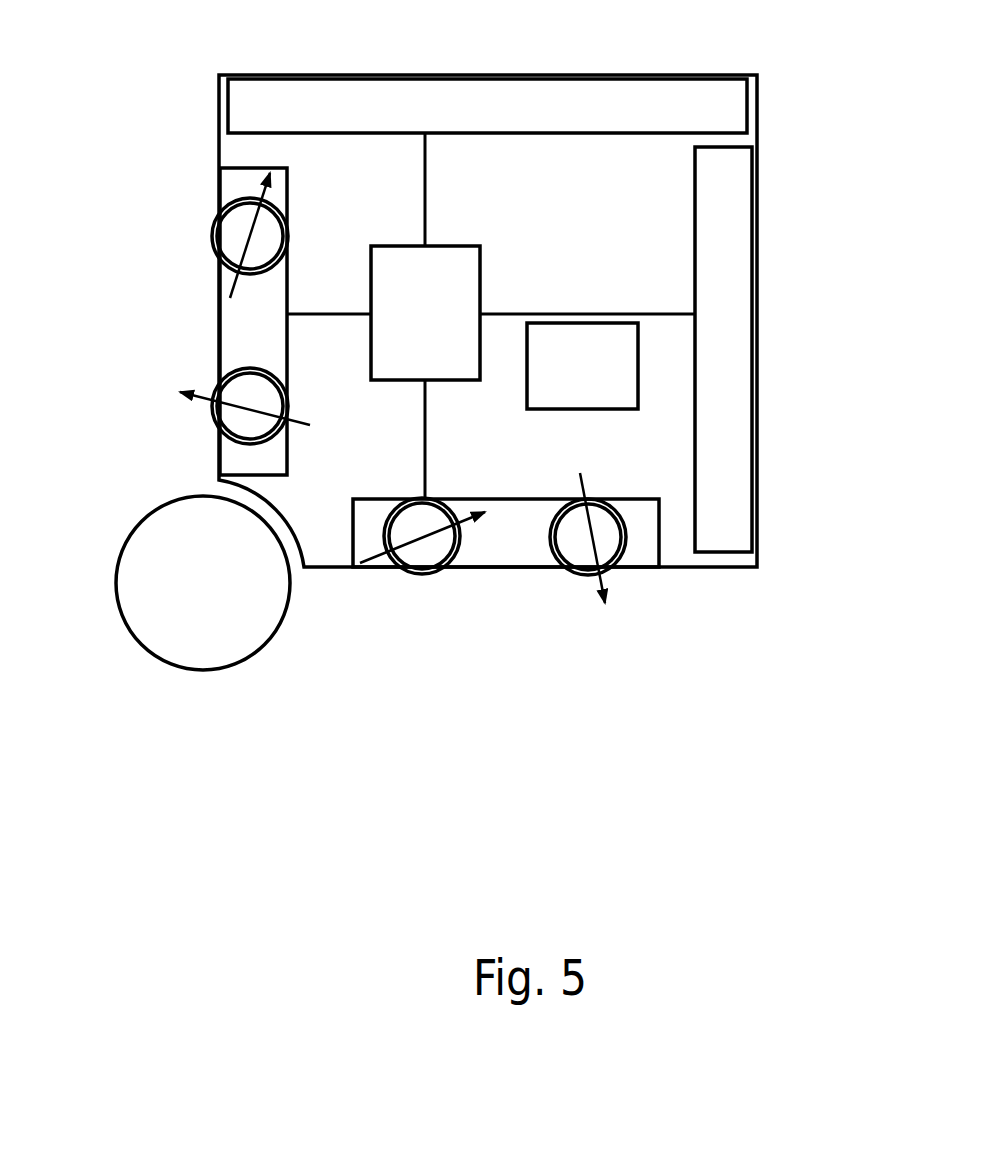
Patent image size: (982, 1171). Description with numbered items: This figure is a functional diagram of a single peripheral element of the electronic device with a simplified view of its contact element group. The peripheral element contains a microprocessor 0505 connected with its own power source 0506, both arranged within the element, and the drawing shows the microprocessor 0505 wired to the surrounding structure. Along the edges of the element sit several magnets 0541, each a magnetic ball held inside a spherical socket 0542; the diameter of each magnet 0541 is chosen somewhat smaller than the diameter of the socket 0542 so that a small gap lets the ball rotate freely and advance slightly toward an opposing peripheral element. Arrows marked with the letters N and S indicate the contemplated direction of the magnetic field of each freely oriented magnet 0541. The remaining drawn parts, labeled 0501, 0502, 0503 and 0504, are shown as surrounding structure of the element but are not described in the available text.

The roller 0501 is at (190, 613).
The housing 0502 is at (708, 558).
The magnetic conductive plate 0503 is at (580, 107).
The left magnet holder 0504 is at (227, 450).
The microprocessor 0505 is at (462, 282).
The power source 0506 is at (615, 385).
The magnet 0541 is at (242, 223).
The spherical socket 0542 is at (447, 567).